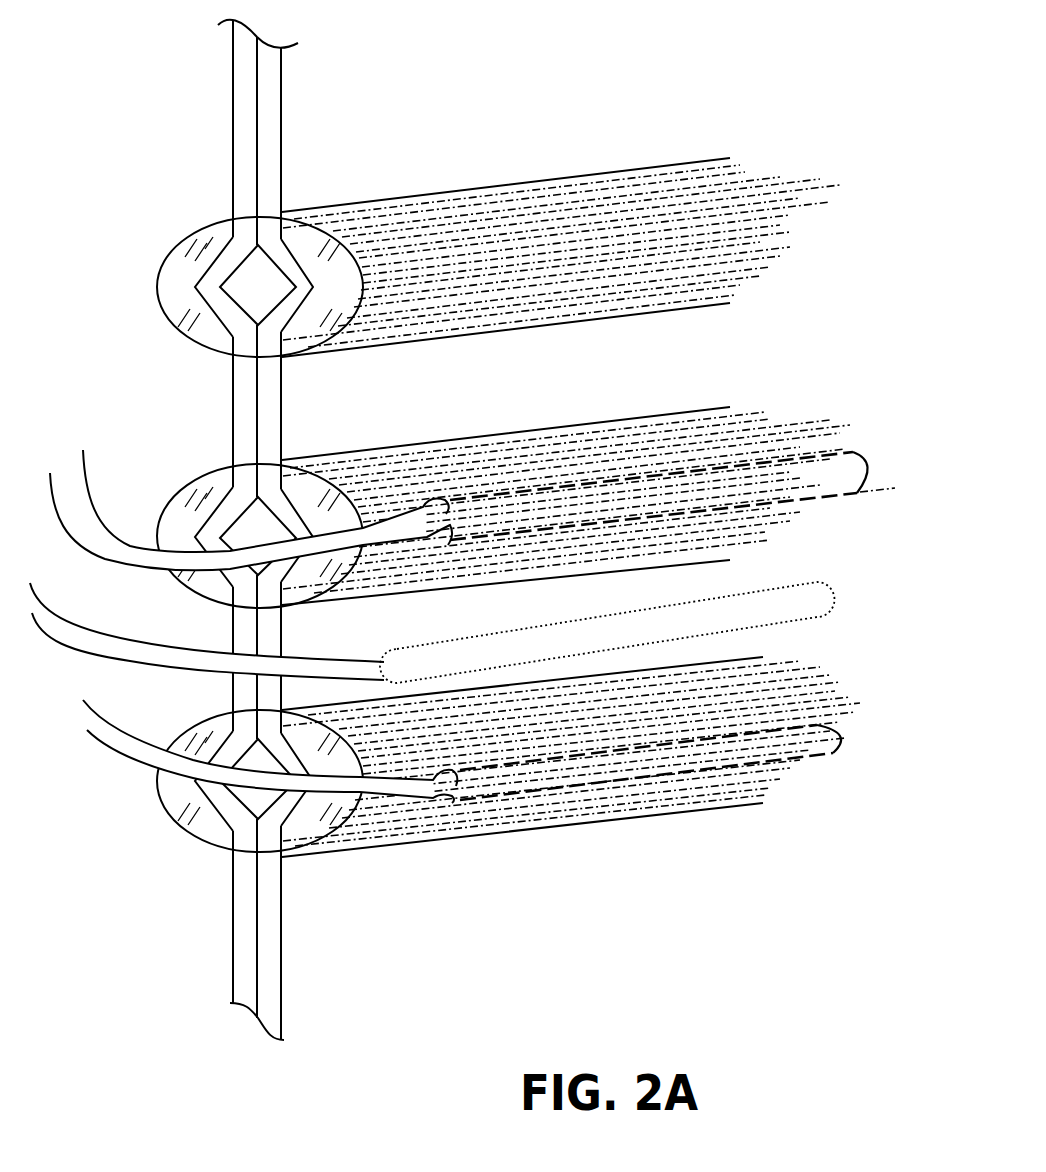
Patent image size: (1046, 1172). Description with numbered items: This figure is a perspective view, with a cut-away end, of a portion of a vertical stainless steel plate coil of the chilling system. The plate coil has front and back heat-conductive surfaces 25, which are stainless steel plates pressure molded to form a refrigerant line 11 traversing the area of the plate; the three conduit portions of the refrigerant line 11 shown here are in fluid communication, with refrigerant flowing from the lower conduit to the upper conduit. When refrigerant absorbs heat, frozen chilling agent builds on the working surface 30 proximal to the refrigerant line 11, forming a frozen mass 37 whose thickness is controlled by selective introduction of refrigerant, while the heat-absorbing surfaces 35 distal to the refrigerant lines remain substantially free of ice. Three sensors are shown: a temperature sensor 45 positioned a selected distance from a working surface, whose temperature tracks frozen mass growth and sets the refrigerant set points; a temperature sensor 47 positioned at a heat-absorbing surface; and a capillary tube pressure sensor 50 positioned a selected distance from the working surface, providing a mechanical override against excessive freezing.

The refrigerant line 11 is at (211, 505).
The heat-conductive surfaces 25 is at (263, 530).
The working surface 30 is at (215, 349).
The heat-absorbing surfaces 35 is at (313, 405).
The frozen mass 37 is at (280, 242).
The temperature sensor 45 is at (527, 770).
The temperature sensor 47 is at (533, 647).
The capillary tube pressure sensor 50 is at (508, 507).